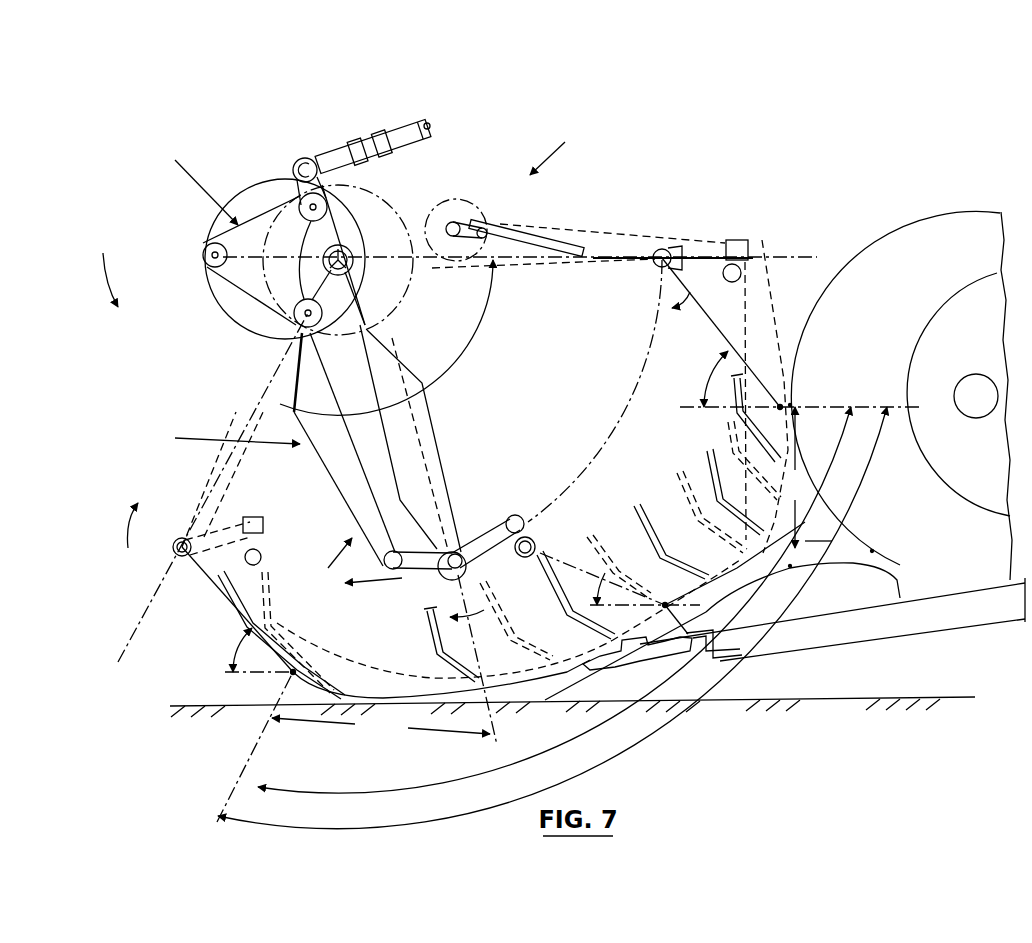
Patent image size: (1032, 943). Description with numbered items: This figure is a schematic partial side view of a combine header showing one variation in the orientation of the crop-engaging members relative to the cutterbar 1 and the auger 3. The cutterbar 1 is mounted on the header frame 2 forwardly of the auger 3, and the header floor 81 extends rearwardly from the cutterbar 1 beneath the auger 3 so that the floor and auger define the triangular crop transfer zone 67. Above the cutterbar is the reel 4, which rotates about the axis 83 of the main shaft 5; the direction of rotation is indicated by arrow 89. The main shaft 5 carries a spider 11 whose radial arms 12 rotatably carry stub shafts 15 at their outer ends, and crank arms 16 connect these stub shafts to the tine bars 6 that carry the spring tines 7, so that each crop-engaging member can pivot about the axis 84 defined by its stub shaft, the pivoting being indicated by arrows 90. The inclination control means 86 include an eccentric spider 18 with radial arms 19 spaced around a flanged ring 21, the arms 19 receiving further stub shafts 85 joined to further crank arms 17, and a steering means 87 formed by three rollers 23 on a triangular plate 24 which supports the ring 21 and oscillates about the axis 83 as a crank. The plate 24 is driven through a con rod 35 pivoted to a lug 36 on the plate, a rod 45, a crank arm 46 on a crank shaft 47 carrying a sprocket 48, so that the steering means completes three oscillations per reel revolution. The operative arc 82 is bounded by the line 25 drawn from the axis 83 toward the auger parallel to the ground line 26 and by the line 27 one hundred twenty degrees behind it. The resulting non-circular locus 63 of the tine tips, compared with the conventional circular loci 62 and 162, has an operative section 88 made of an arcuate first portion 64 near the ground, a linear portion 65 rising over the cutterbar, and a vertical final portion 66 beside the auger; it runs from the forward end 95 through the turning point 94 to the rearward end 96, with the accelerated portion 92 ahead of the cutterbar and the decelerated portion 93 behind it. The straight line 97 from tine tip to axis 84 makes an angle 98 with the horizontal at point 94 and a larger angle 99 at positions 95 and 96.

The cutterbar 1 is at (628, 662).
The header frame 2 is at (890, 630).
The auger 3 is at (1000, 253).
The reel 4 is at (555, 146).
The main shaft 5 is at (352, 252).
The tine bar 6 is at (742, 242).
The spring tine 7 is at (774, 296).
The spider 11 is at (458, 485).
The radial arm 12 is at (618, 240).
The stub shaft 15 is at (664, 249).
The crank arm 16 is at (708, 244).
The further crank arm 17 is at (428, 618).
The eccentric spider 18 is at (358, 564).
The eccentric spider radial arm 19 is at (332, 462).
The flanged ring 21 is at (236, 318).
The roller 23 is at (310, 222).
The triangular plate 24 is at (238, 280).
The line 25 is at (792, 256).
The ground line 26 is at (795, 701).
The line 27 is at (120, 655).
The adjustable con rod 35 is at (392, 138).
The lug 36 is at (324, 180).
The rod 45 is at (556, 244).
The crank arm 46 is at (486, 230).
The crank shaft 47 is at (468, 222).
The sprocket 48 is at (450, 210).
The locus 62 is at (620, 432).
The non-circular locus 63 is at (786, 405).
The first portion 64 is at (384, 660).
The second portion 65 is at (670, 605).
The final portion 66 is at (797, 477).
The crop transfer zone 67 is at (818, 530).
The header floor 81 is at (872, 551).
The operative arc 82 is at (444, 375).
The axis 83 is at (352, 272).
The axis 84 is at (658, 270).
The further stub shaft 85 is at (390, 551).
The inclination control means 86 is at (221, 438).
The steering means 87 is at (191, 182).
The operative section 88 is at (722, 672).
The rotation arrow 89 is at (94, 280).
The pivot arrow 90 is at (410, 467).
The portion 92 is at (446, 780).
The portion 93 is at (792, 566).
The turning point 94 is at (666, 603).
The forward end 95 is at (290, 674).
The rearward end 96 is at (792, 404).
The straight line 97 is at (730, 338).
The angle 98 is at (597, 600).
The angle 99 is at (708, 386).
The circular locus 162 is at (676, 480).